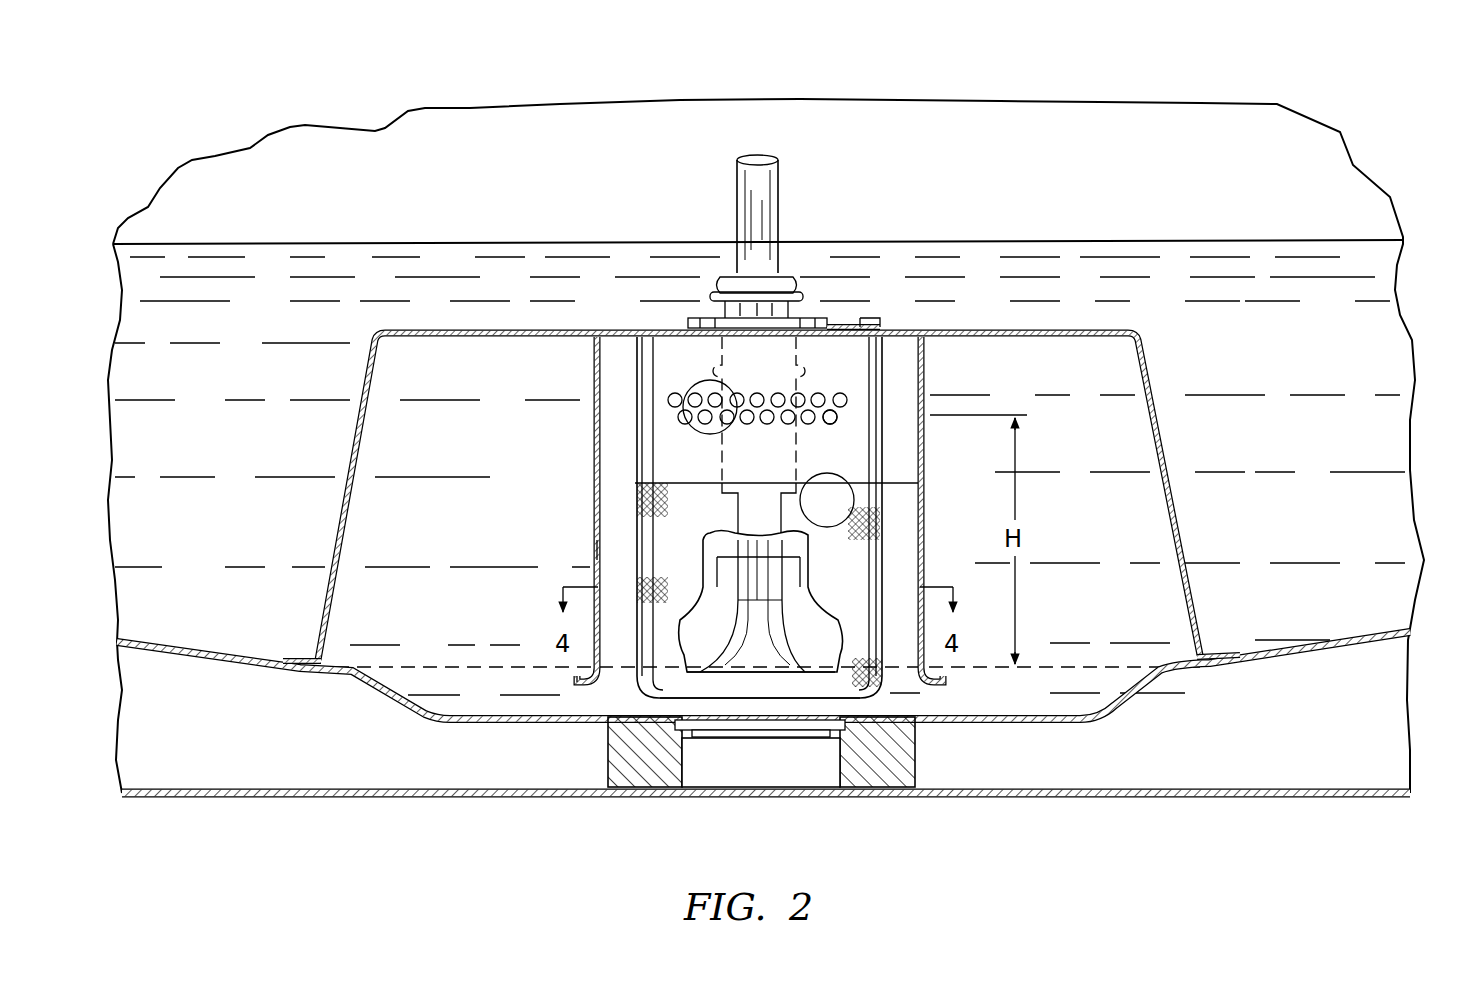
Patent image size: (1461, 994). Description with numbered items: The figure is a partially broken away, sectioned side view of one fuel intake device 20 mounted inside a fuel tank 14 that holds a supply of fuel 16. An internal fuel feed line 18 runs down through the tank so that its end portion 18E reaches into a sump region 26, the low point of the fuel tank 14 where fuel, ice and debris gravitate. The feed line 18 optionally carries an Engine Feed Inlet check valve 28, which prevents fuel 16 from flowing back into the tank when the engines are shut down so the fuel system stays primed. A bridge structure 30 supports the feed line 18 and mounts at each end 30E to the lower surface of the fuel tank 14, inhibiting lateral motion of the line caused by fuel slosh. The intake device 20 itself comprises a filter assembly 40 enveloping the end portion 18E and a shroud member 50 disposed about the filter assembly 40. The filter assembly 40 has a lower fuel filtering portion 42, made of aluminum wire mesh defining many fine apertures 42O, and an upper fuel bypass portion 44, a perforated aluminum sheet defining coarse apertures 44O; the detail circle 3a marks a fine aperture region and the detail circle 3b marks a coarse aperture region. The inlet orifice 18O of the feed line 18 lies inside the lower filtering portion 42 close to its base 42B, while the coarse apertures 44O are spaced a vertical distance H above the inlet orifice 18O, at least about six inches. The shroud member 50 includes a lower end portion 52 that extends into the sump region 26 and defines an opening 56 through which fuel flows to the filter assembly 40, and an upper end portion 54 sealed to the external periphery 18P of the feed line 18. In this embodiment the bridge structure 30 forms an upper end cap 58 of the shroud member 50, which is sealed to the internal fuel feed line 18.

The fuel tank 14 is at (1318, 198).
The fuel supply 16 is at (1347, 304).
The internal fuel feed line 18 is at (768, 178).
The external periphery of the internal fuel feed line 18P is at (705, 345).
The inlet orifice 18O is at (719, 672).
The end portion of the internal fuel feed line 18E is at (756, 653).
The fuel intake device 20 is at (470, 485).
The sump region 26 is at (1033, 690).
The EFI check valve 28 is at (765, 357).
The bridge structure 30 is at (1172, 490).
The end of the bridge structure 30E is at (298, 657).
The section detail circle 3a is at (852, 500).
The section detail circle 3b is at (690, 392).
The filter assembly 40 is at (530, 410).
The lower fuel filtering portion 42 is at (655, 535).
The fine apertures 42O is at (870, 520).
The base of the lower fuel filtering portion 42B is at (808, 698).
The upper fuel bypass portion 44 is at (665, 410).
The coarse apertures 44O is at (835, 418).
The shroud member 50 is at (598, 548).
The lower end portion of the shroud member 52 is at (576, 688).
The upper end portion of the shroud member 54 is at (932, 357).
The opening 56 is at (900, 680).
The upper end cap 58 is at (905, 327).